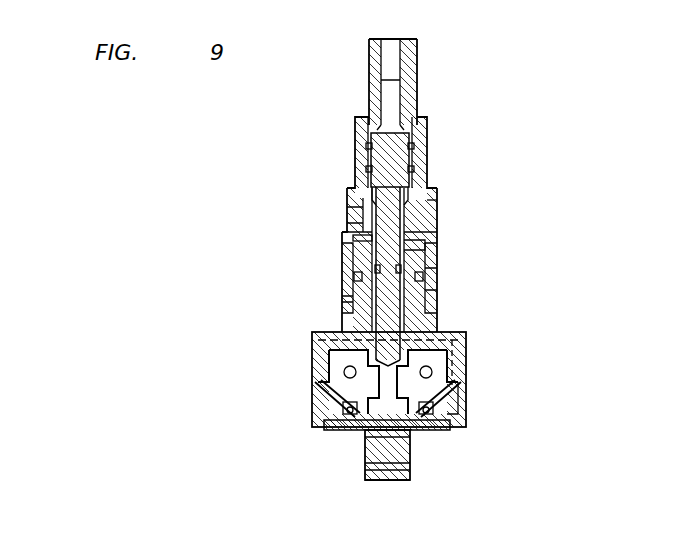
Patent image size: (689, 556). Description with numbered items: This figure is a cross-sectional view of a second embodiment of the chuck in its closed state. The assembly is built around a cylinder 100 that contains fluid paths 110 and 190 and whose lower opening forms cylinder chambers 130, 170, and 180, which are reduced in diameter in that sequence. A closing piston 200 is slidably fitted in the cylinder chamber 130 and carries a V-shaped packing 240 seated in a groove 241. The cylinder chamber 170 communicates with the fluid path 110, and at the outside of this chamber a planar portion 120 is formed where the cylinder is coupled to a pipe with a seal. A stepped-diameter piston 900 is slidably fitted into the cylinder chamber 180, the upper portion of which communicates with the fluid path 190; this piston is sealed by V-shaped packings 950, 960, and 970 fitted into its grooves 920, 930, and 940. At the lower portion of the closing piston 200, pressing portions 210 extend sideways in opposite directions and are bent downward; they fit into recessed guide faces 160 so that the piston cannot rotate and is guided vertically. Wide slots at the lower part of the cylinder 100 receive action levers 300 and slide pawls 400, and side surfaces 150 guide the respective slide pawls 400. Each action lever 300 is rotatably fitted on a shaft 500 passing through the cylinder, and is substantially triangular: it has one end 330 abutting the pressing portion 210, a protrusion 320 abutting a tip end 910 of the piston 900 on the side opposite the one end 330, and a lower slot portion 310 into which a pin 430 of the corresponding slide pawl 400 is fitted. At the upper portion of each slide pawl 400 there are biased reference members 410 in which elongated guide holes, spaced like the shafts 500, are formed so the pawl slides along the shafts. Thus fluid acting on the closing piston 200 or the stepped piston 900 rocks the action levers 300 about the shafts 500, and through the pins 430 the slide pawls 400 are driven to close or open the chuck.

The cylinder 100 is at (410, 82).
The fluid path 110 is at (345, 210).
The planar portion 120 is at (340, 213).
The cylinder chamber 130 is at (342, 238).
The side surfaces 150 is at (466, 410).
The recessed guide faces 160 is at (345, 318).
The cylinder chamber 170 is at (432, 205).
The cylinder chamber 180 is at (353, 122).
The fluid path 190 is at (396, 42).
The piston 200 is at (428, 257).
The pressing portions 210 is at (318, 366).
The V-shaped packing 240 is at (437, 278).
The groove 241 is at (347, 298).
The action lever 300 is at (357, 433).
The lower slot portion 310 is at (448, 430).
The protrusion 320 is at (446, 370).
The one end 330 is at (470, 392).
The slide pawl 400 is at (395, 480).
The biased reference members 410 is at (315, 332).
The pin 430 is at (410, 445).
The shaft 500 is at (345, 377).
The stepped-diameter piston 900 is at (427, 180).
The tip end 910 is at (433, 325).
The groove 920 is at (414, 146).
The groove 930 is at (414, 169).
The groove 940 is at (430, 248).
The V-shaped packing 950 is at (366, 146).
The V-shaped packing 960 is at (366, 169).
The V-shaped packing 970 is at (356, 268).